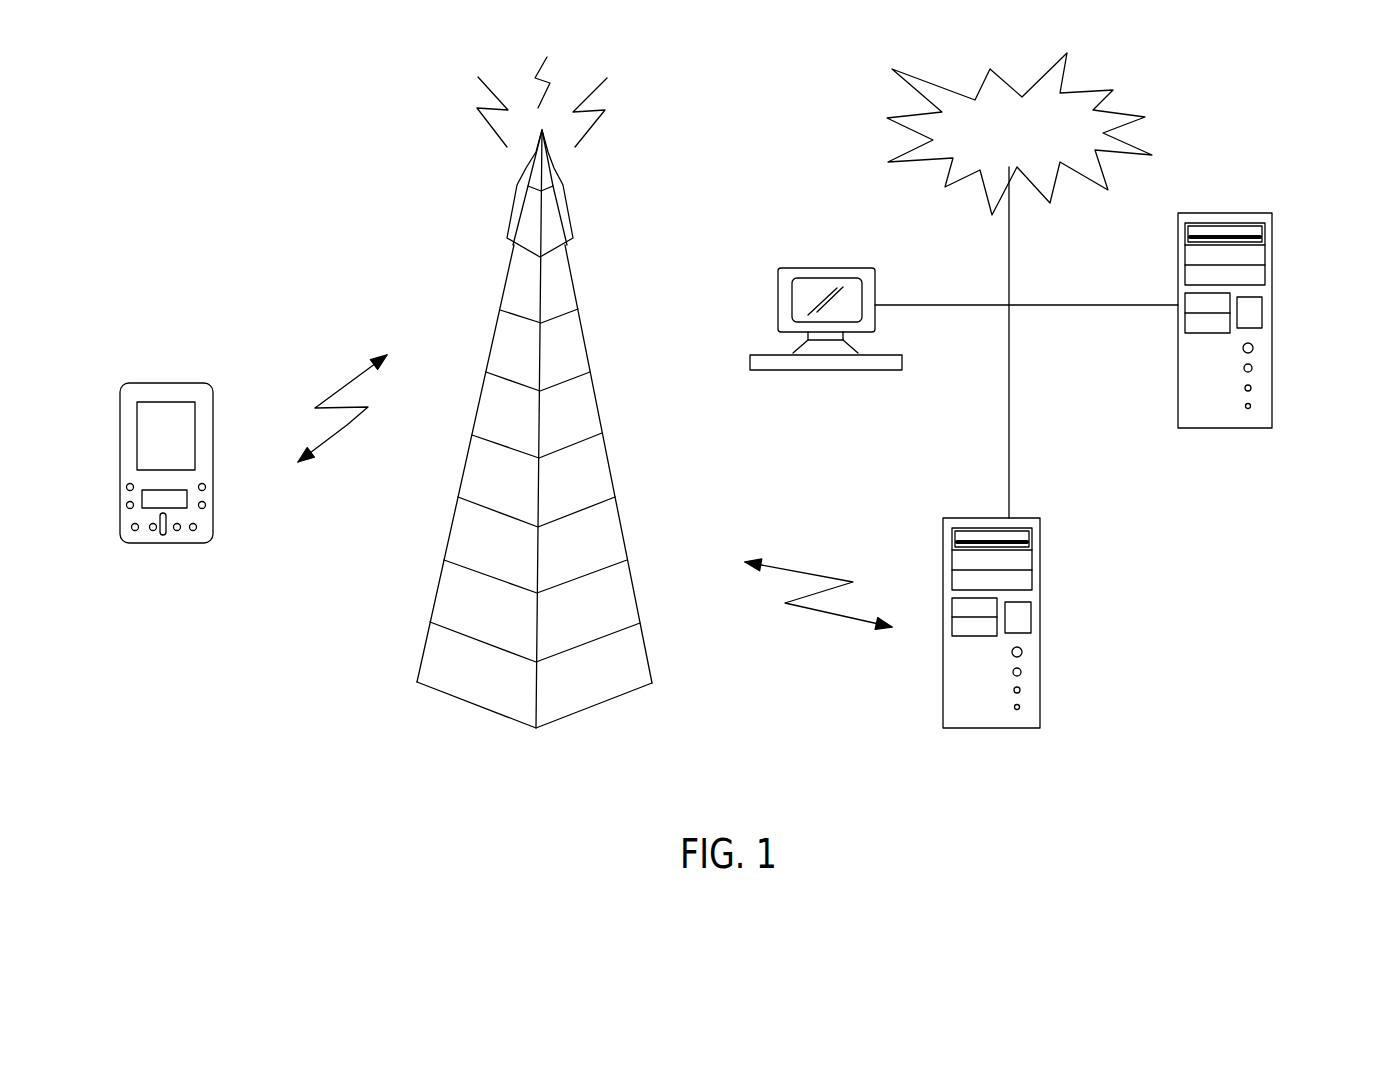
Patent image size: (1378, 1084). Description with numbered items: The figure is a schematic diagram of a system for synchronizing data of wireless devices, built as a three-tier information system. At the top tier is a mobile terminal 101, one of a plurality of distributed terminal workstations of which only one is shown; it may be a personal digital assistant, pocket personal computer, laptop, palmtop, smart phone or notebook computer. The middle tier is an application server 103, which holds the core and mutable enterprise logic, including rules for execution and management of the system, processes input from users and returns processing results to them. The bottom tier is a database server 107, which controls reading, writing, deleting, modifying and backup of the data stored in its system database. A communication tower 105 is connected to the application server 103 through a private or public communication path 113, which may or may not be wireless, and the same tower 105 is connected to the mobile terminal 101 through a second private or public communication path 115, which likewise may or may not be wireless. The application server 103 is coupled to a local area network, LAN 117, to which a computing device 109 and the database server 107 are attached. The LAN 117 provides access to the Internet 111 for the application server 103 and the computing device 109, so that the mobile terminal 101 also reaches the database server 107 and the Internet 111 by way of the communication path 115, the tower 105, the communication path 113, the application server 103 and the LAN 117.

The mobile terminal 101 is at (120, 442).
The application server 103 is at (943, 655).
The communication tower 105 is at (438, 583).
The database server 107 is at (1178, 323).
The computing device 109 is at (778, 320).
The Internet 111 is at (913, 87).
The communication path 113 is at (810, 593).
The communication path 115 is at (350, 427).
The local area network (LAN) 117 is at (1009, 453).